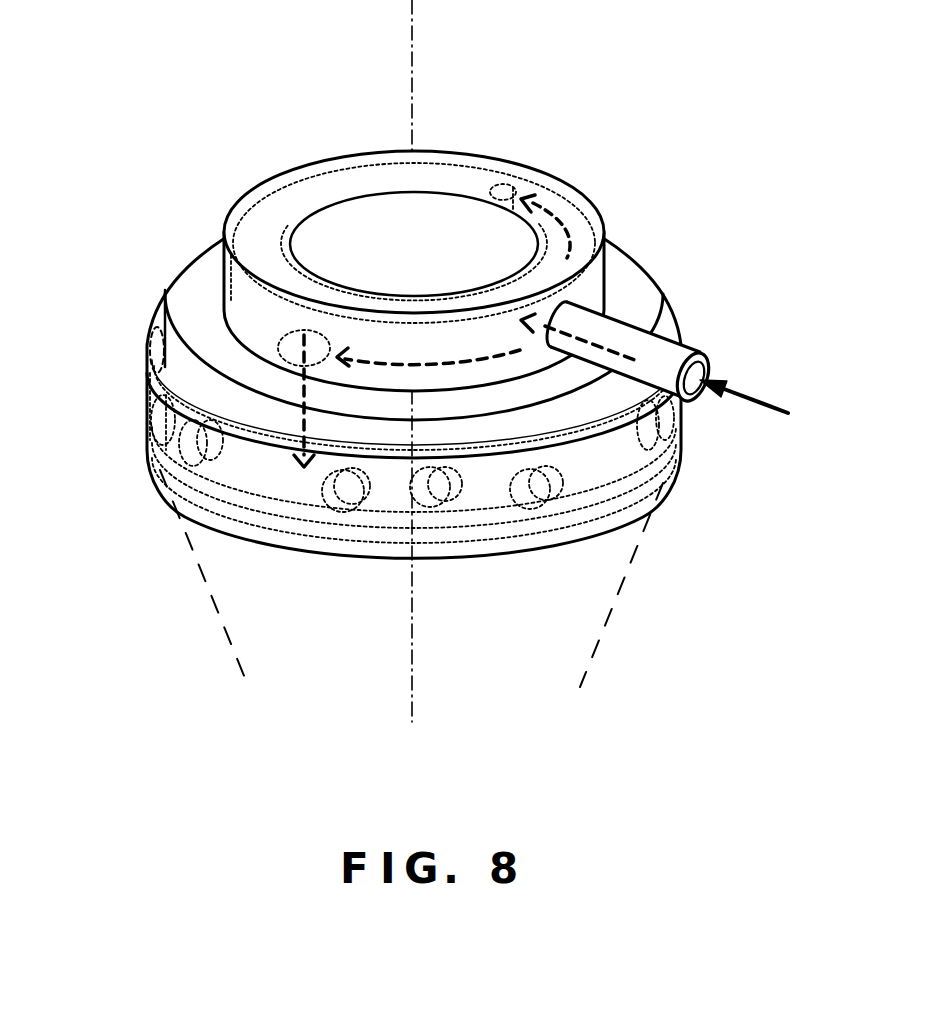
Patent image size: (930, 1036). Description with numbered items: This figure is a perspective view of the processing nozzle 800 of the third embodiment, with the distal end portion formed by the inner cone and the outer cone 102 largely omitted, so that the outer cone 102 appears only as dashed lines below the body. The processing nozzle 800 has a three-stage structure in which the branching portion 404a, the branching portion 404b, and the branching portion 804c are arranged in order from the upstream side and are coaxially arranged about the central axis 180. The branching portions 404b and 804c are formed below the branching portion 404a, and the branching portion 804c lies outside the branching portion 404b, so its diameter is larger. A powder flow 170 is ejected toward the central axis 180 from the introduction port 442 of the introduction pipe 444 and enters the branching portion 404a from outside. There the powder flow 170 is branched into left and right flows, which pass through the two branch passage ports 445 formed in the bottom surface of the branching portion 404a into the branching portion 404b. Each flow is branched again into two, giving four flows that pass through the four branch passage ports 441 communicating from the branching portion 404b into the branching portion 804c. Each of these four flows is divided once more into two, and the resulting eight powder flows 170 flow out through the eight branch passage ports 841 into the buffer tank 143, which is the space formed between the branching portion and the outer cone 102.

The processing nozzle 800 is at (178, 95).
The central axis 180 is at (410, 100).
The branching portion 404a is at (492, 150).
The branching portion 404b is at (178, 271).
The powder flow 170 is at (560, 228).
The introduction pipe 444 is at (676, 375).
The introduction port 442 is at (707, 394).
The branch passage ports 445 is at (277, 343).
The branch passage ports 841 is at (150, 346).
The branching portion 804c is at (165, 412).
The buffer tank 143 is at (155, 452).
The branch passage ports 441 is at (437, 490).
The outer cone 102 is at (183, 549).